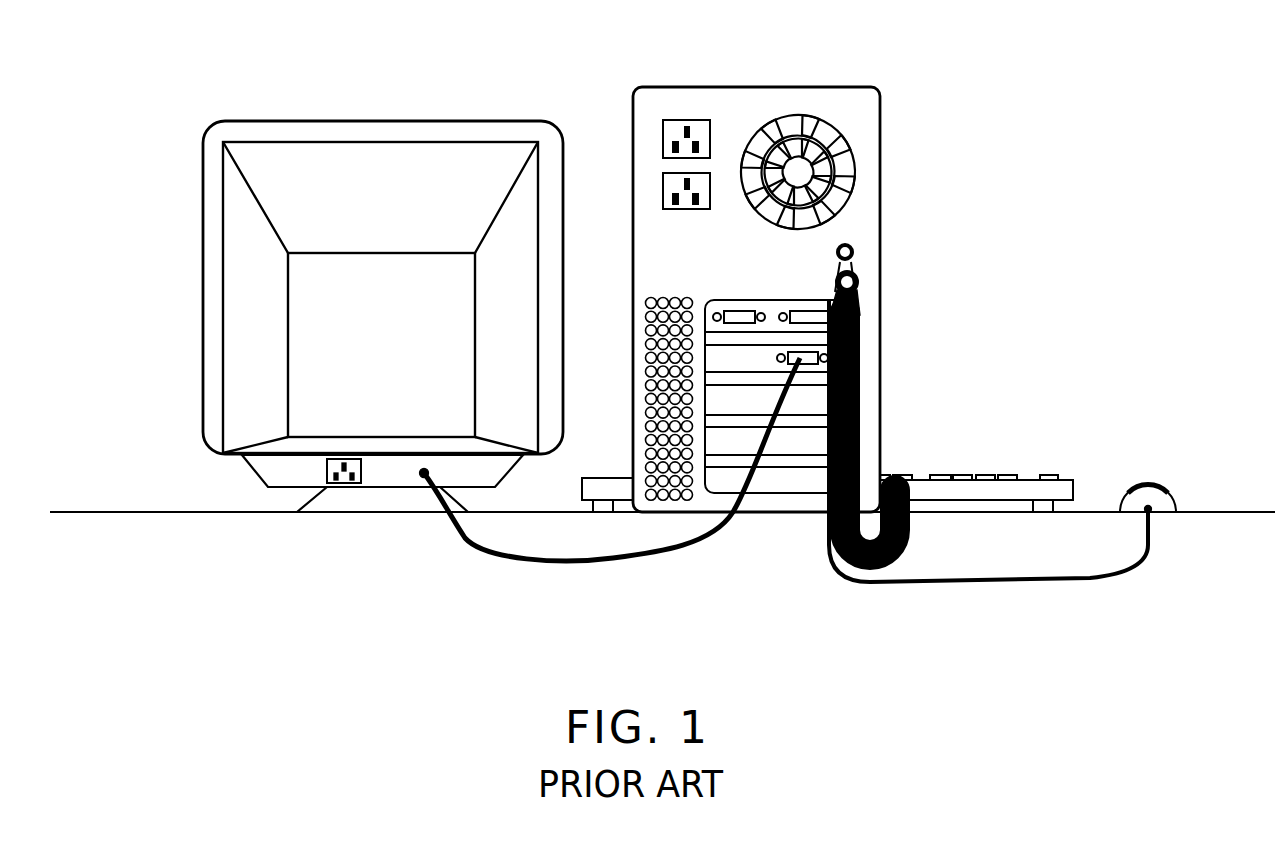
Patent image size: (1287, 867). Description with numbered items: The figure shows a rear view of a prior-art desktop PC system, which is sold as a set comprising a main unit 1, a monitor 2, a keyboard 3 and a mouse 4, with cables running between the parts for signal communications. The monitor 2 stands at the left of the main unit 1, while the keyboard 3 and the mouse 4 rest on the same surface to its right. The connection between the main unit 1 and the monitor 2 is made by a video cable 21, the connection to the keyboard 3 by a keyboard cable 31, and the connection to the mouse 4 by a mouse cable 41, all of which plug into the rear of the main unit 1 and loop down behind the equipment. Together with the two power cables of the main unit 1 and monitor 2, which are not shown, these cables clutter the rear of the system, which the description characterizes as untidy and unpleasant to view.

The main unit 1 is at (863, 120).
The monitor 2 is at (438, 167).
The video cable 21 is at (458, 538).
The keyboard 3 is at (1023, 490).
The keyboard cable 31 is at (860, 362).
The mouse 4 is at (1165, 503).
The mouse cable 41 is at (1125, 567).